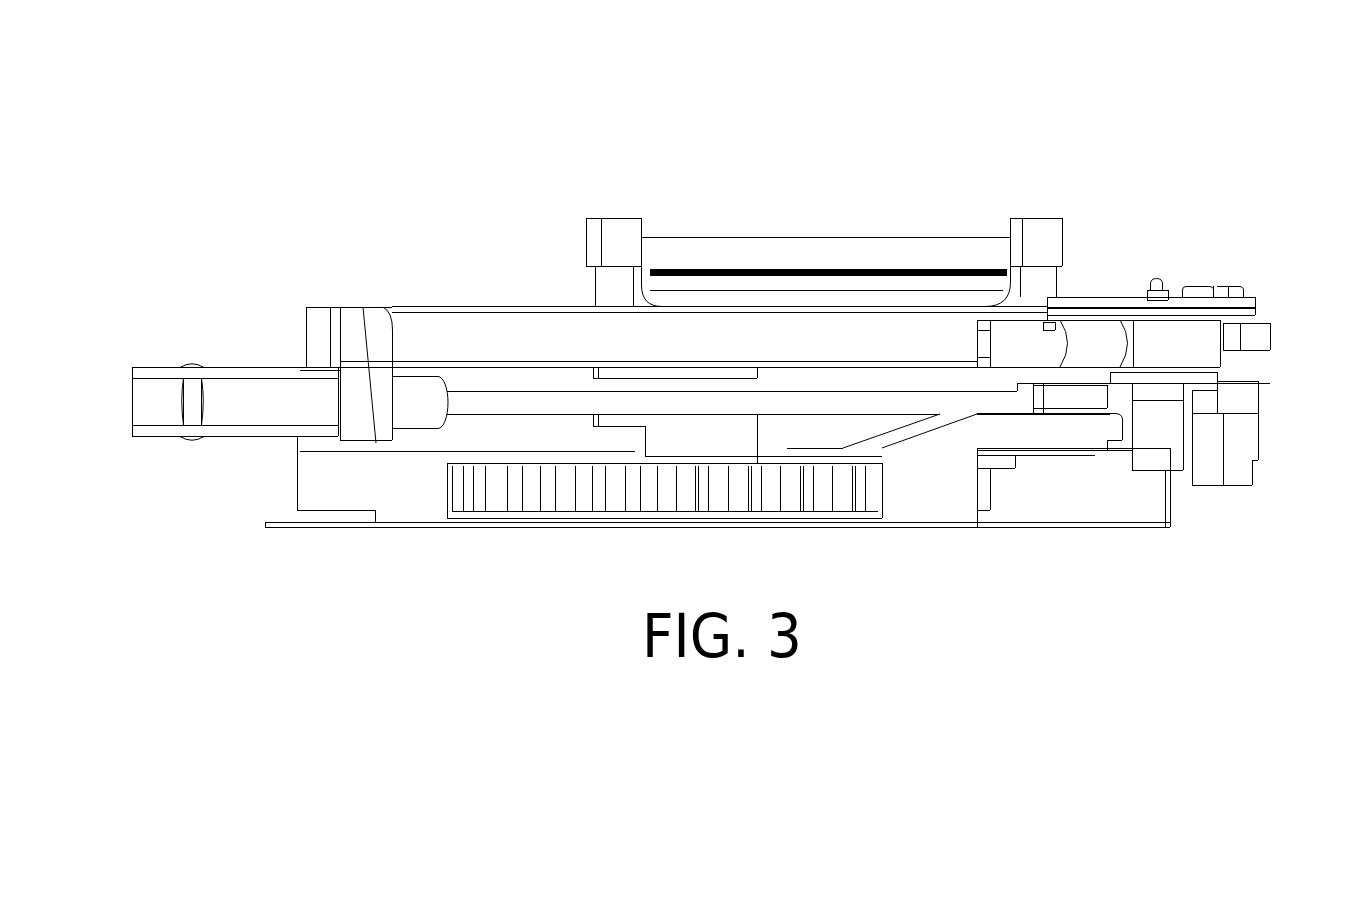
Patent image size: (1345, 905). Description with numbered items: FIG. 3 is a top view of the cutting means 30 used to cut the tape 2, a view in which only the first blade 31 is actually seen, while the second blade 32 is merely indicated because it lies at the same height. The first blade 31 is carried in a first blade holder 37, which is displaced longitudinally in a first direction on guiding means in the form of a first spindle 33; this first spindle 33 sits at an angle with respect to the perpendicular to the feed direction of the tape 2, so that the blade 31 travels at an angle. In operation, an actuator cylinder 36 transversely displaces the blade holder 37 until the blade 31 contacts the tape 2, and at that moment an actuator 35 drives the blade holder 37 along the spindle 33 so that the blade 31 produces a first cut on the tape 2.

The cutting means 30 is at (1015, 147).
The tape 2 is at (785, 270).
The first spindle 33 is at (658, 403).
The actuator 35 is at (300, 397).
The first blade 31 is at (1157, 278).
The second blade 32 is at (1158, 295).
The first blade holder 37 is at (1173, 335).
The actuator cylinder 36 is at (1235, 428).